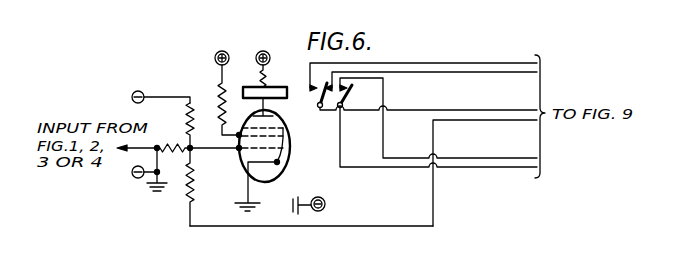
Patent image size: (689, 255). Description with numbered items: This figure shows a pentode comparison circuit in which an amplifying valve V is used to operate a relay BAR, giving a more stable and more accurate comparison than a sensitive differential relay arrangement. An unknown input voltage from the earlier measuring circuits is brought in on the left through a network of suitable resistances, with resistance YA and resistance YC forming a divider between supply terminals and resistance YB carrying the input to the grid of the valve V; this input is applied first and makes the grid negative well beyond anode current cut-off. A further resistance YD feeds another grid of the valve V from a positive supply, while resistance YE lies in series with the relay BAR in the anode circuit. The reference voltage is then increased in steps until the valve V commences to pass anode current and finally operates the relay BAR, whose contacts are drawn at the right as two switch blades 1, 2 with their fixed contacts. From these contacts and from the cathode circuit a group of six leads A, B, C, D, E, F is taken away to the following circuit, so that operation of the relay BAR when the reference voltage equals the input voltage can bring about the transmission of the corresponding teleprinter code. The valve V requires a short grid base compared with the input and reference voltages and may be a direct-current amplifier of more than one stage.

The resistance YA is at (178, 125).
The resistance YB is at (175, 156).
The resistance YC is at (202, 187).
The resistance YD is at (231, 93).
The resistance YE is at (272, 69).
The relay BAR is at (250, 87).
The amplifying valve V is at (272, 154).
The switch 1 is at (315, 98).
The switch 2 is at (340, 98).
The lead A to FIG. 9 A is at (423, 70).
The lead B to FIG. 9 B is at (431, 81).
The lead C to FIG. 9 C is at (428, 102).
The lead D to FIG. 9 D is at (485, 173).
The lead E to FIG. 9 E is at (438, 118).
The lead F to FIG. 9 F is at (438, 147).